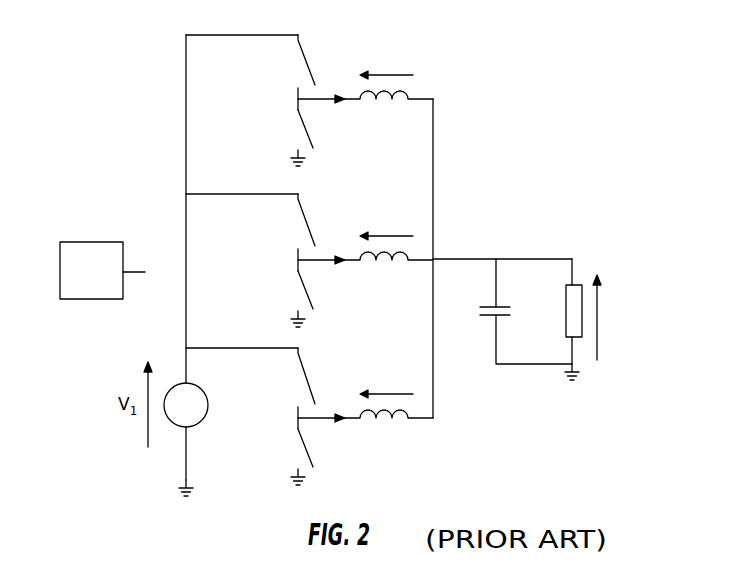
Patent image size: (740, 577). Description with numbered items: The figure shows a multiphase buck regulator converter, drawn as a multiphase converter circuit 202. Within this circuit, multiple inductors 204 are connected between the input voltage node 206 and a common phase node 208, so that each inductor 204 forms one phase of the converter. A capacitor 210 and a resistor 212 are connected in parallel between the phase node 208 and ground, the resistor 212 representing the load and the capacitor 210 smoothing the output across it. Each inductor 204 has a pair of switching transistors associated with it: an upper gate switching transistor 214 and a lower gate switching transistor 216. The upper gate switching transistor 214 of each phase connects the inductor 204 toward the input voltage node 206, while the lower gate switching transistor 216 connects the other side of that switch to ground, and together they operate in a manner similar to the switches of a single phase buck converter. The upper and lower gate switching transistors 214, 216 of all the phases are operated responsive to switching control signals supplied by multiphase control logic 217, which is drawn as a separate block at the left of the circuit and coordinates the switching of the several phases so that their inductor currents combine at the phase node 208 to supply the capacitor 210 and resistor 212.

The multiphase converter circuit 202 is at (513, 125).
The inductor 204 is at (368, 102).
The input voltage node 206 is at (184, 193).
The phase node 208 is at (438, 258).
The capacitor 210 is at (487, 318).
The resistor 212 is at (577, 282).
The upper gate switching transistor 214 is at (303, 55).
The lower gate switching transistor 216 is at (308, 137).
The multiphase control logic 217 is at (90, 299).